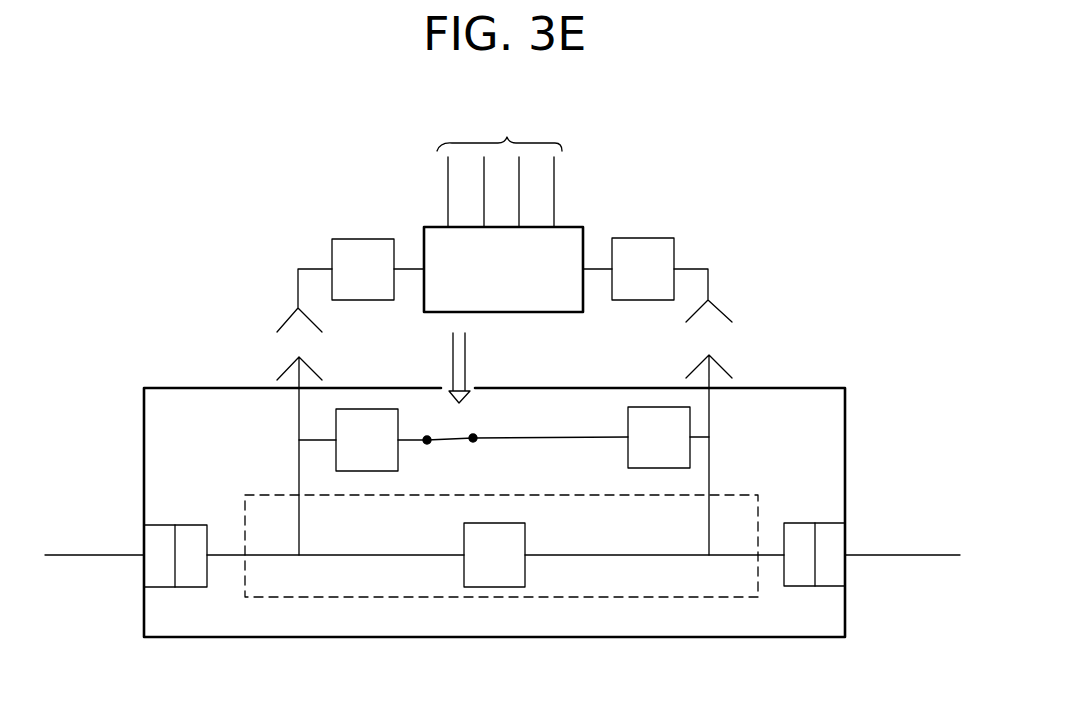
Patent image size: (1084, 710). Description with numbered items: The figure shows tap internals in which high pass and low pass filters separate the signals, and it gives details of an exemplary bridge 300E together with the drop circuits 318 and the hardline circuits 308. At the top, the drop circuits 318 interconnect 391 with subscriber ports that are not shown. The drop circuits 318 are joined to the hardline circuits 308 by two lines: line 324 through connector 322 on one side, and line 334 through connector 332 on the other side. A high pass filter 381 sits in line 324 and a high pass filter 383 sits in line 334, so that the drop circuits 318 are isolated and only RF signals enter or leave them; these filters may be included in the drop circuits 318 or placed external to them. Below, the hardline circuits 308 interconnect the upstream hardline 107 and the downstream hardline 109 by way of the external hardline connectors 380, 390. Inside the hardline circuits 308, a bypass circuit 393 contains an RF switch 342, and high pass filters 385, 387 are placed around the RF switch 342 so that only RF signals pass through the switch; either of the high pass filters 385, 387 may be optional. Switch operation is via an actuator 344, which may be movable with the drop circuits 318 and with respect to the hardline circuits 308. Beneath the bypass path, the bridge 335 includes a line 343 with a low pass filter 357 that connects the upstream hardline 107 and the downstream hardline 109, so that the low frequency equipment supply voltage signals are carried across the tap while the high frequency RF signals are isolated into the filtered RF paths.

The bridge 300E is at (740, 135).
The drop circuits 318 is at (566, 301).
The interconnect with subscriber ports 391 is at (499, 165).
The high pass filter 381 is at (357, 238).
The high pass filter 383 is at (646, 236).
The line 324 is at (405, 265).
The line 334 is at (594, 265).
The connector 322 is at (287, 346).
The connector 332 is at (722, 342).
The hardline circuits 308 is at (826, 429).
The actuator 344 is at (472, 358).
The bypass circuit 393 is at (315, 437).
The high pass filter 385 is at (336, 458).
The RF switch 342 is at (492, 412).
The high pass filter 387 is at (690, 458).
The low pass filter 357 is at (490, 523).
The line 343 is at (337, 553).
The bridge 335 is at (575, 596).
The hardline connector 380 is at (190, 580).
The hardline connector 390 is at (795, 586).
The upstream hardline 107 is at (70, 558).
The downstream hardline 109 is at (876, 558).